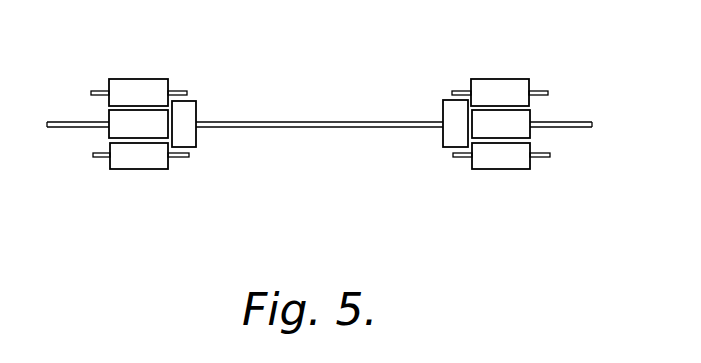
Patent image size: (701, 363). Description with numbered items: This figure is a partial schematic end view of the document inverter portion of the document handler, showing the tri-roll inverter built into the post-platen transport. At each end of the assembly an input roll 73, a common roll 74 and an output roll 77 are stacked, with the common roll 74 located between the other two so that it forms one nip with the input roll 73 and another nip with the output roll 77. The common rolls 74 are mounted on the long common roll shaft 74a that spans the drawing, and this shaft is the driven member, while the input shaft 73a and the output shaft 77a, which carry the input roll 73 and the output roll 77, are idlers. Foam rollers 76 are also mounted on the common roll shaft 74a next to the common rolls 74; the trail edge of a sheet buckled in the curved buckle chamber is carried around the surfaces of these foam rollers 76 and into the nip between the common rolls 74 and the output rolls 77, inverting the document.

The input roll 73 is at (137, 165).
The input shaft 73a is at (98, 160).
The common roll 74 is at (113, 118).
The common roll shaft 74a is at (313, 128).
The foam rollers 76 is at (192, 112).
The output roll 77 is at (138, 83).
The output shaft 77a is at (182, 92).